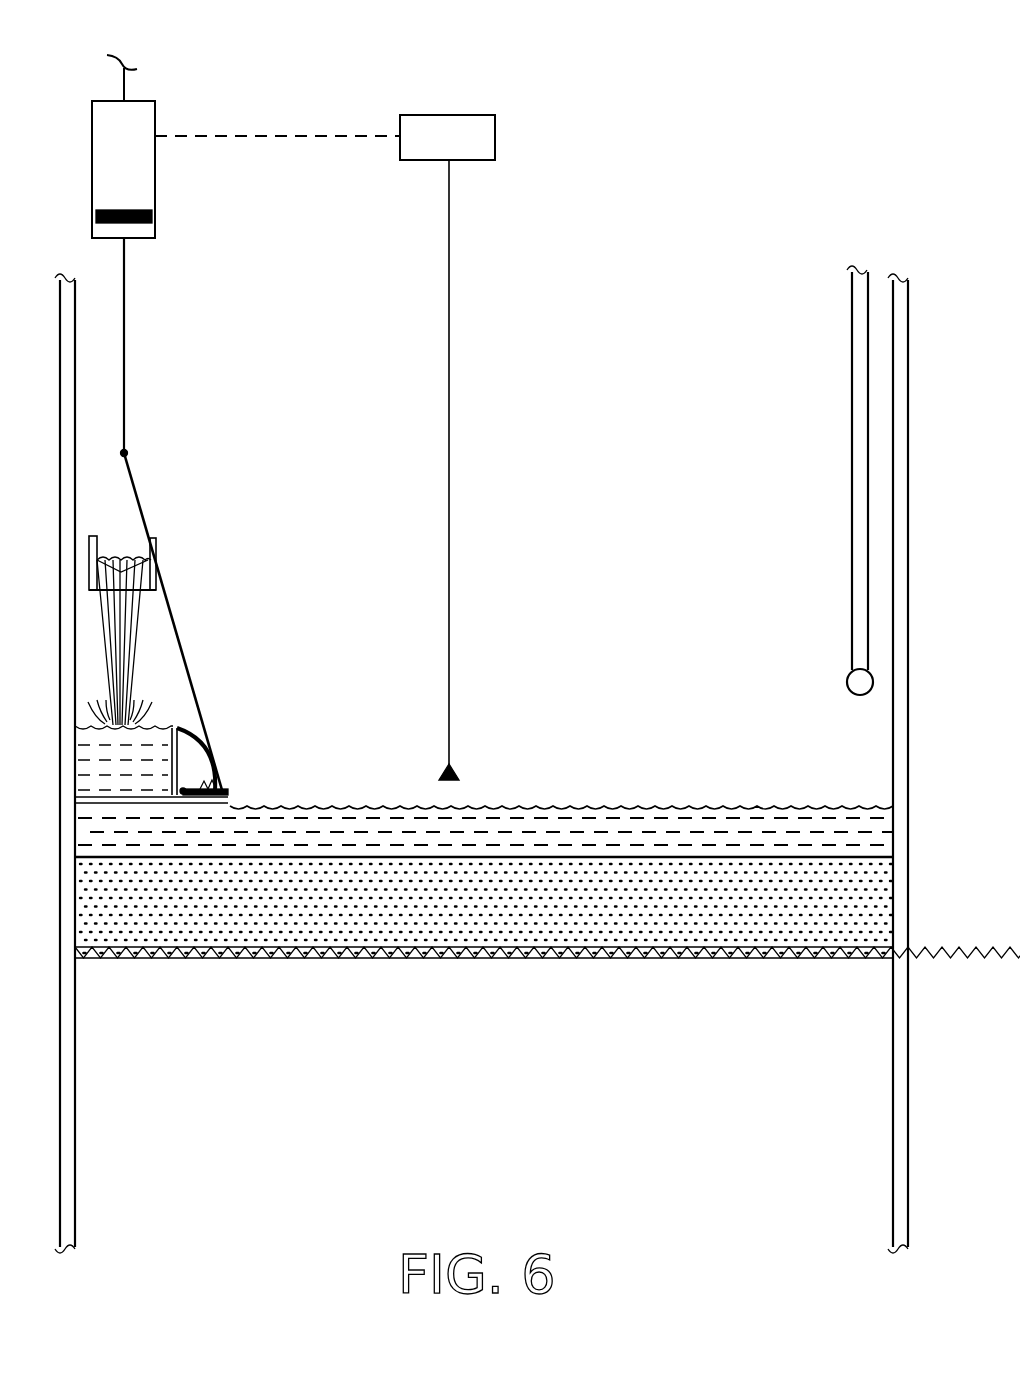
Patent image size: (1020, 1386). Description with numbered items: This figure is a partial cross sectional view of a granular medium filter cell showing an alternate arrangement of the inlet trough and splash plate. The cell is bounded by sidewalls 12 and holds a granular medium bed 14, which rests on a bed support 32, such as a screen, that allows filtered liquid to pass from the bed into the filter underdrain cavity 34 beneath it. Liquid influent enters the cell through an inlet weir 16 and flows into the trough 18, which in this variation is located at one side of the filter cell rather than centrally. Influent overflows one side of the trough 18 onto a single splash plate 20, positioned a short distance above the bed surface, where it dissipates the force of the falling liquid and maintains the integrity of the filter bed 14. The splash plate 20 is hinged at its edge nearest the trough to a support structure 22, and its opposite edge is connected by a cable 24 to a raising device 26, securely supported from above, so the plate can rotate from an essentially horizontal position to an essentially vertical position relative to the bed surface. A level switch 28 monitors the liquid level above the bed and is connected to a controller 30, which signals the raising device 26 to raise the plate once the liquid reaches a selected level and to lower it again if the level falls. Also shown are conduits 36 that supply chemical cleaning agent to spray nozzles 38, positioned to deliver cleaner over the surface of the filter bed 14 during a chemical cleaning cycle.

The sidewalls 12 is at (67, 350).
The granular medium bed 14 is at (195, 930).
The inlet weir 16 is at (158, 549).
The trough 18 is at (183, 742).
The splash plate 20 is at (213, 790).
The support structures 22 is at (213, 805).
The cable 24 is at (140, 483).
The raising device 26 is at (155, 112).
The level switch 28 is at (445, 770).
The controller 30 is at (456, 117).
The bed support 32 is at (278, 958).
The filter underdrain cavity 34 is at (498, 1046).
The conduits 36 is at (860, 578).
The spray nozzles 38 is at (850, 680).